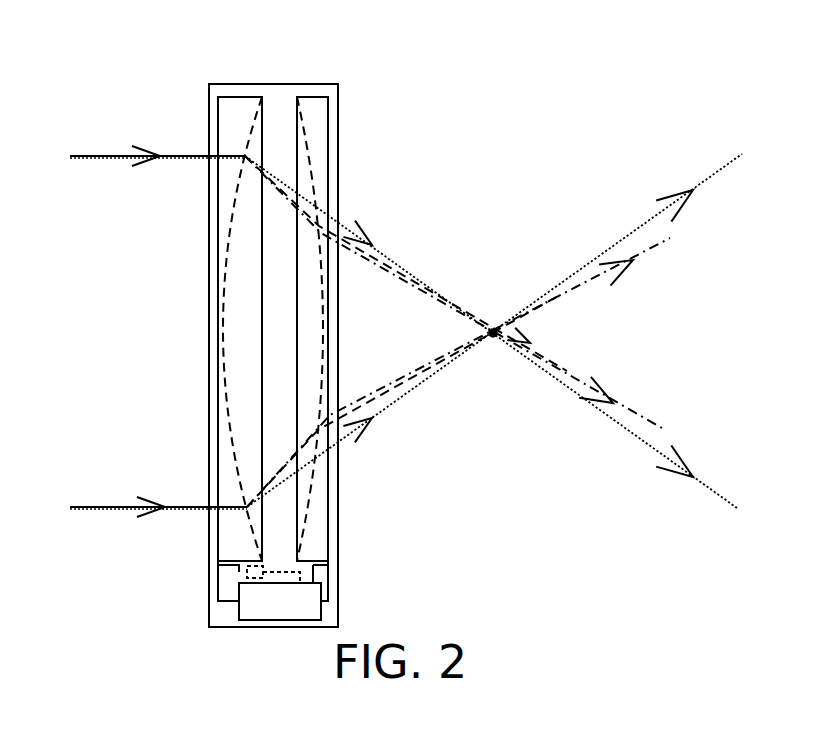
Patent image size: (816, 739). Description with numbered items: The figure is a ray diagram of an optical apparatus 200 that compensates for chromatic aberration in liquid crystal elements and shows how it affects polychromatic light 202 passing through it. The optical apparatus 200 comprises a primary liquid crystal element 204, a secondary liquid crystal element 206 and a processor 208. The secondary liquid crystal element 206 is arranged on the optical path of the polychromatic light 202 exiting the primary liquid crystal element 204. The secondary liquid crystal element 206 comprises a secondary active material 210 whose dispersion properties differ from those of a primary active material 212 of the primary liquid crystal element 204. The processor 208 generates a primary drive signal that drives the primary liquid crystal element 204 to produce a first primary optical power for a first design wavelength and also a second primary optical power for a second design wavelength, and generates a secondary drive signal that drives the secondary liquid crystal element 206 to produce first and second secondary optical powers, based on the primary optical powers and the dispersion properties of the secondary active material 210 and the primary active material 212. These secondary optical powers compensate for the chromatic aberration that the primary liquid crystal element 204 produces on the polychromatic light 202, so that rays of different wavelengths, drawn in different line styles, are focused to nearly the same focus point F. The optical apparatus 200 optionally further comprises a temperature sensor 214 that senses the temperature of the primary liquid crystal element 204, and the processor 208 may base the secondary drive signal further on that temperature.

The optical apparatus 200 is at (279, 84).
The polychromatic light 202 is at (88, 143).
The primary liquid crystal element 204 is at (233, 98).
The secondary liquid crystal element 206 is at (317, 97).
The processor 208 is at (280, 601).
The secondary active material 210 is at (318, 117).
The primary active material 212 is at (230, 120).
The temperature sensor 214 is at (247, 572).
The focus point F is at (495, 327).